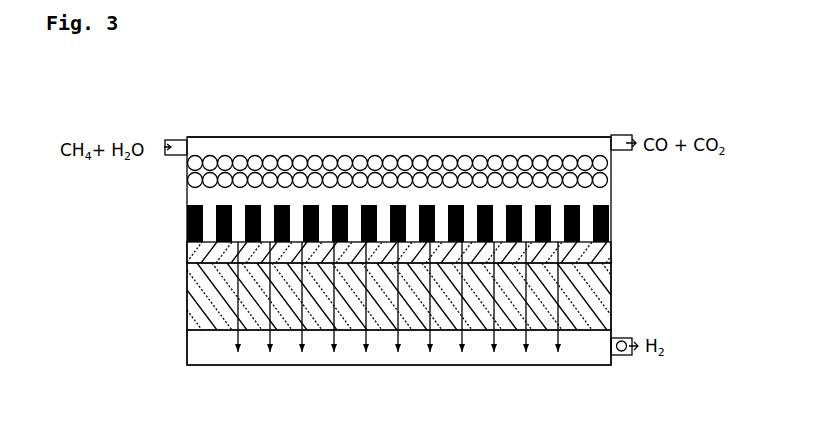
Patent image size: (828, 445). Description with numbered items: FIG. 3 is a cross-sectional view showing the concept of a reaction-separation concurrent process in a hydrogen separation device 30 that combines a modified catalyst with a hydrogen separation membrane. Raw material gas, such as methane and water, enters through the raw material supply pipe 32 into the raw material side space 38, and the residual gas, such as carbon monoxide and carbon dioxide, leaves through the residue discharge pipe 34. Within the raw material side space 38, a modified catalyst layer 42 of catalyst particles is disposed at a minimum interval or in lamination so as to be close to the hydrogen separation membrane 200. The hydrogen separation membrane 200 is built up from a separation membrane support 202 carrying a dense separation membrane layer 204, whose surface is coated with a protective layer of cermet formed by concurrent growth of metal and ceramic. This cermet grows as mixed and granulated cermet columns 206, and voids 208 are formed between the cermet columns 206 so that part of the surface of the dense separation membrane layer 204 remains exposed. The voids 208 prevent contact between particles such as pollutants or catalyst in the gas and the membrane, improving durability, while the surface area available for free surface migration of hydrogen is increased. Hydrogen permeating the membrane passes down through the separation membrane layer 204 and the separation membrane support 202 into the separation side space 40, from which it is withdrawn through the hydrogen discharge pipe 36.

The hydrogen separation device 30 is at (553, 137).
The raw material supply pipe 32 is at (172, 140).
The residue discharge pipe 34 is at (621, 135).
The hydrogen discharge pipe 36 is at (621, 355).
The raw material side space 38 is at (402, 139).
The separation side space 40 is at (418, 349).
The modified catalyst layer 42 is at (612, 163).
The hydrogen separation membrane 200 is at (458, 223).
The separation membrane support 202 is at (612, 297).
The separation membrane layer 204 is at (612, 245).
The cermet column 206 is at (483, 199).
The void 208 is at (326, 205).